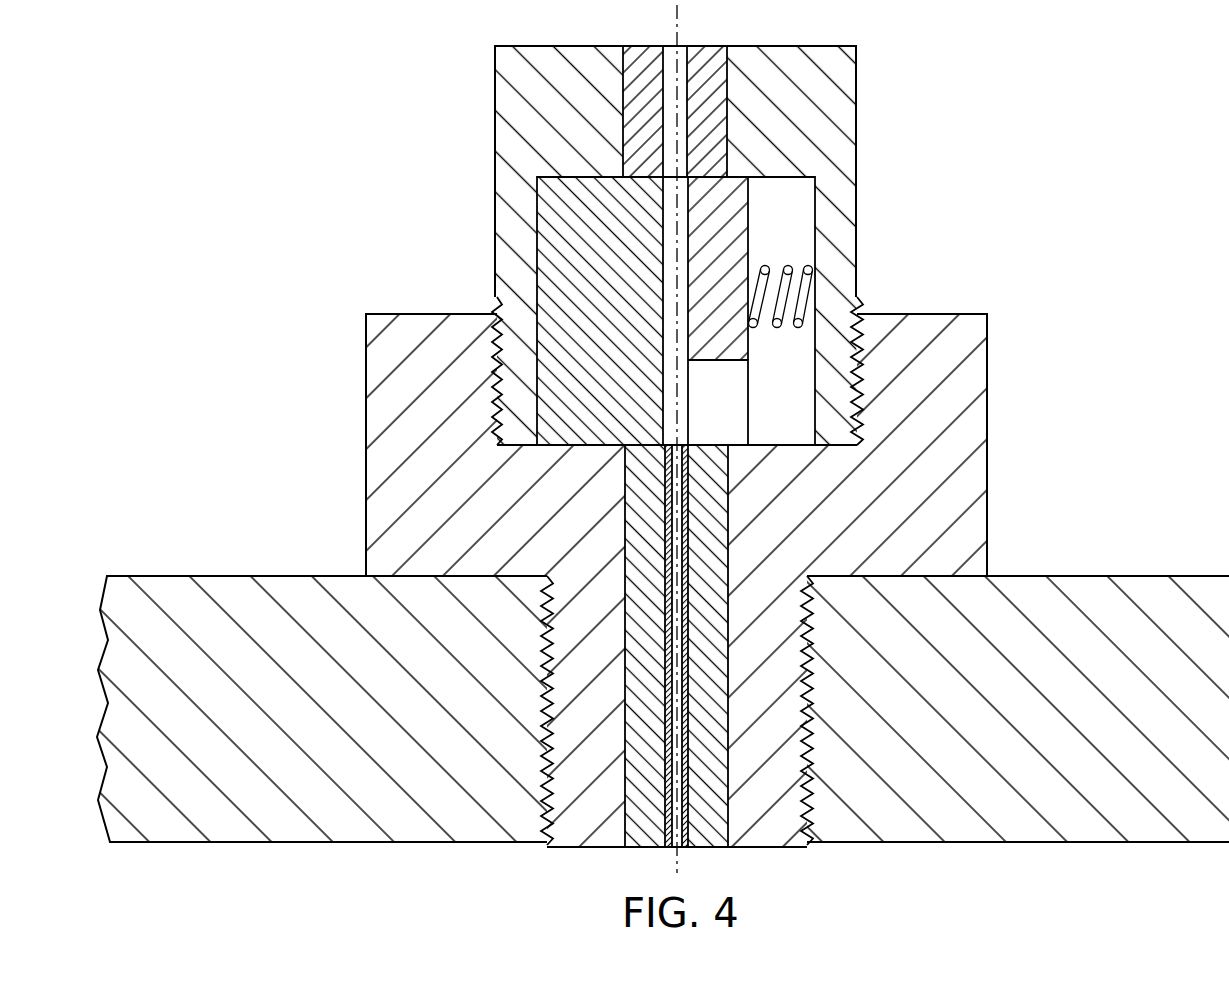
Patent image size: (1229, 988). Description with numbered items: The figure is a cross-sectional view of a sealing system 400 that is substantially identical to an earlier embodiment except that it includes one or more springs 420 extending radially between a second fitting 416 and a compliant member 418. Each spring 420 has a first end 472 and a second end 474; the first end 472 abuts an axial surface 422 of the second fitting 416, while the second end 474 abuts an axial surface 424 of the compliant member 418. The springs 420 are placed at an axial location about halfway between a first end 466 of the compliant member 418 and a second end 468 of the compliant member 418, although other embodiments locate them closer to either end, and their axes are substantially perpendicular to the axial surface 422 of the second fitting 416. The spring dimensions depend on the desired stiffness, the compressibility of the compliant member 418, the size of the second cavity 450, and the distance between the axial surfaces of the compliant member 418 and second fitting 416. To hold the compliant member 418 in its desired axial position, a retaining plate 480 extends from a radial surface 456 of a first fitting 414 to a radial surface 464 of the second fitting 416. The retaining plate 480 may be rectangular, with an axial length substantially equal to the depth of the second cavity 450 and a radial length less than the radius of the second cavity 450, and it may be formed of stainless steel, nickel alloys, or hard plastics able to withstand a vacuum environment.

The sealing system 400 is at (924, 96).
The first fitting 414 is at (976, 360).
The second fitting 416 is at (847, 159).
The compliant member 418 is at (745, 357).
The spring 420 is at (835, 302).
The axial surface of the second fitting 422 is at (810, 385).
The axial surface of the compliant member 424 is at (760, 205).
The second cavity 450 is at (790, 203).
The radial surface of the first fitting 456 is at (787, 445).
The radial surface of the second fitting 464 is at (813, 182).
The first end of the compliant member 466 is at (703, 365).
The second end of the compliant member 468 is at (638, 176).
The first end of the spring 472 is at (802, 298).
The second end of the spring 474 is at (745, 314).
The retaining plate 480 is at (548, 390).